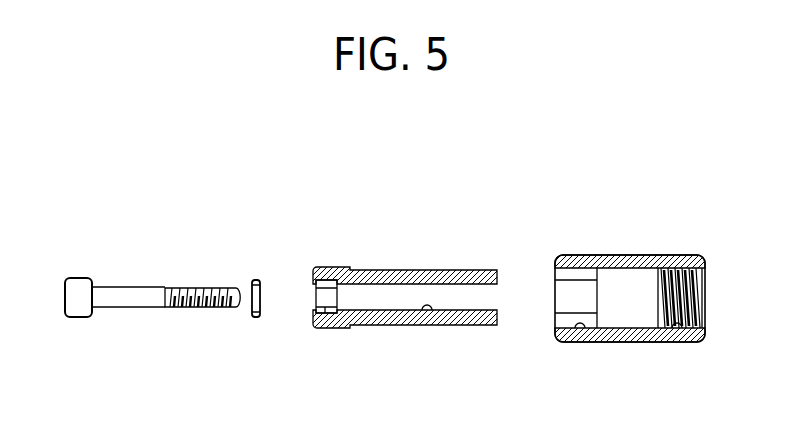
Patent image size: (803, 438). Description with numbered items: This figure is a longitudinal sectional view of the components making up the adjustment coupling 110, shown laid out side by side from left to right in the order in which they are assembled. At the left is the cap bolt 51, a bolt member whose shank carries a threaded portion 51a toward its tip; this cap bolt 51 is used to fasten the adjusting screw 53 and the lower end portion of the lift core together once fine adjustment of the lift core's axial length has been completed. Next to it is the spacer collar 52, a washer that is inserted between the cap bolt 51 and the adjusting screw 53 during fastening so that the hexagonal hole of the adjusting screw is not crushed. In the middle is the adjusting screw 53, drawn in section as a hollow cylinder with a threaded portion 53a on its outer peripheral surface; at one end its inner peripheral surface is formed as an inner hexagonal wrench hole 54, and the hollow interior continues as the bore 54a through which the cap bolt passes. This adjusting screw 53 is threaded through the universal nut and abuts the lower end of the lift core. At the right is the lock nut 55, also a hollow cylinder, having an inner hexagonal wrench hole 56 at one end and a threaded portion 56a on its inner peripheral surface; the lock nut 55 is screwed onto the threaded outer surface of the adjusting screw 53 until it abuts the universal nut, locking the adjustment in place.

The adjustment coupling 110 is at (138, 195).
The cap bolt 51 is at (80, 287).
The threaded portion of cap bolt 51a is at (193, 288).
The spacer collar 52 is at (253, 318).
The adjusting screw 53 is at (322, 268).
The threaded portion 53a is at (423, 270).
The inner hexagonal wrench hole 54 is at (313, 303).
The inner bore of adjusting screw 54a is at (427, 310).
The lock nut 55 is at (628, 255).
The inner hexagonal wrench hole 56 is at (580, 330).
The threaded portion 56a is at (677, 330).